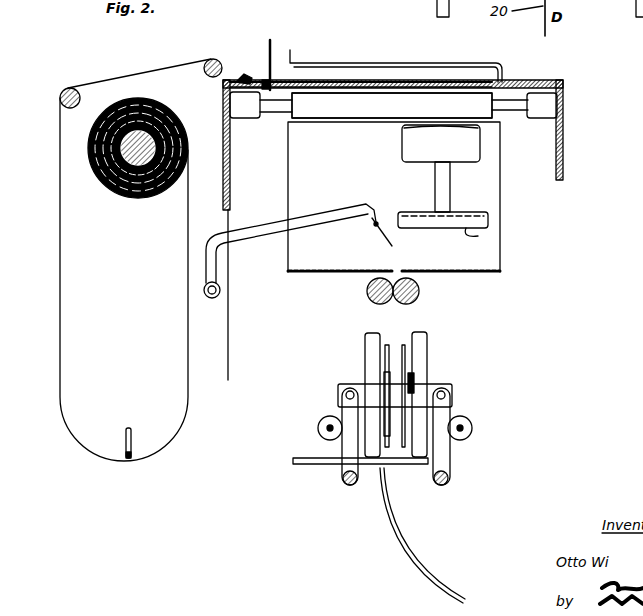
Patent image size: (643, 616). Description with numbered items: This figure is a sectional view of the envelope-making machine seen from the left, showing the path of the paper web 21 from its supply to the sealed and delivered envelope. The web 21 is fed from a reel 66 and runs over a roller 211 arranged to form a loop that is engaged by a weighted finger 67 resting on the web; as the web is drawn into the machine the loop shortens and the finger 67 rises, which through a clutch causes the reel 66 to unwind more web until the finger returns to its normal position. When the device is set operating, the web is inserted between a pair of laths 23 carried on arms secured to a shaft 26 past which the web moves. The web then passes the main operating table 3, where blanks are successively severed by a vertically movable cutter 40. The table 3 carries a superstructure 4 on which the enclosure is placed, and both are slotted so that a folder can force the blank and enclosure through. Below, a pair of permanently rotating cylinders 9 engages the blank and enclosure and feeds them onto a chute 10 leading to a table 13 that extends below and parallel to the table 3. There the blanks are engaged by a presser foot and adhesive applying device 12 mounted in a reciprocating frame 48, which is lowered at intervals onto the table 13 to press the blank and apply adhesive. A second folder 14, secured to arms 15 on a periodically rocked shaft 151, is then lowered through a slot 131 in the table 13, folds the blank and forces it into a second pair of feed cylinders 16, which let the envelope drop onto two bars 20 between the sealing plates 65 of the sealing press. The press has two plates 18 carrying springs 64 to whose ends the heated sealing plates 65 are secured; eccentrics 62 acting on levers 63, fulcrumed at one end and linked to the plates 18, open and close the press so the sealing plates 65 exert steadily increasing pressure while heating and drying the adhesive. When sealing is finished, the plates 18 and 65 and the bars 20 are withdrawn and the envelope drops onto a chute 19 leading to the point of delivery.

The main operating table 3 is at (468, 84).
The superstructure 4 is at (466, 62).
The permanently rotating cylinders 9 is at (369, 118).
The chute 10 is at (498, 156).
The presser foot and adhesive applying device 12 is at (478, 236).
The table 13 is at (430, 270).
The slot 131 is at (396, 272).
The second folder 14 is at (388, 216).
The arms 15 is at (268, 245).
The shaft 151 is at (210, 300).
The second pair of feed cylinders 16 is at (400, 301).
The plates of the sealing press 18 is at (381, 338).
The chute 19 is at (406, 551).
The bars 20 is at (305, 465).
The web 21 is at (60, 286).
The roller 211 is at (71, 88).
The laths 23 is at (245, 74).
The shaft 26 is at (210, 60).
The cutter 40 is at (272, 44).
The reciprocating frame 48 is at (482, 216).
The eccentrics 62 is at (322, 421).
The levers 63 is at (348, 462).
The springs 64 is at (414, 384).
The heated sealing plates 65 is at (386, 356).
The reel 66 is at (132, 201).
The weighted finger 67 is at (131, 440).